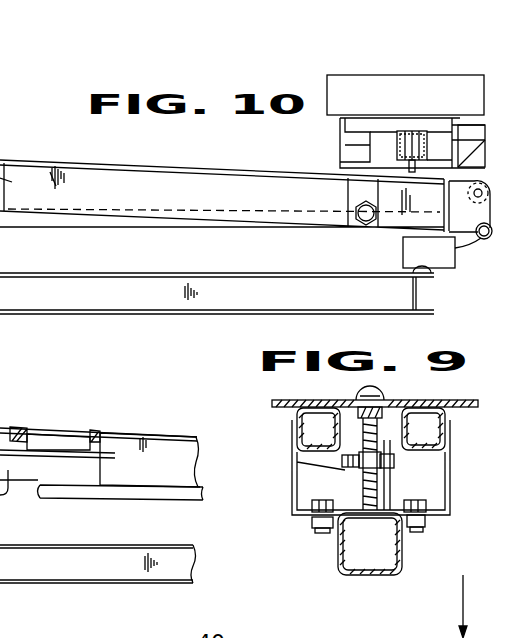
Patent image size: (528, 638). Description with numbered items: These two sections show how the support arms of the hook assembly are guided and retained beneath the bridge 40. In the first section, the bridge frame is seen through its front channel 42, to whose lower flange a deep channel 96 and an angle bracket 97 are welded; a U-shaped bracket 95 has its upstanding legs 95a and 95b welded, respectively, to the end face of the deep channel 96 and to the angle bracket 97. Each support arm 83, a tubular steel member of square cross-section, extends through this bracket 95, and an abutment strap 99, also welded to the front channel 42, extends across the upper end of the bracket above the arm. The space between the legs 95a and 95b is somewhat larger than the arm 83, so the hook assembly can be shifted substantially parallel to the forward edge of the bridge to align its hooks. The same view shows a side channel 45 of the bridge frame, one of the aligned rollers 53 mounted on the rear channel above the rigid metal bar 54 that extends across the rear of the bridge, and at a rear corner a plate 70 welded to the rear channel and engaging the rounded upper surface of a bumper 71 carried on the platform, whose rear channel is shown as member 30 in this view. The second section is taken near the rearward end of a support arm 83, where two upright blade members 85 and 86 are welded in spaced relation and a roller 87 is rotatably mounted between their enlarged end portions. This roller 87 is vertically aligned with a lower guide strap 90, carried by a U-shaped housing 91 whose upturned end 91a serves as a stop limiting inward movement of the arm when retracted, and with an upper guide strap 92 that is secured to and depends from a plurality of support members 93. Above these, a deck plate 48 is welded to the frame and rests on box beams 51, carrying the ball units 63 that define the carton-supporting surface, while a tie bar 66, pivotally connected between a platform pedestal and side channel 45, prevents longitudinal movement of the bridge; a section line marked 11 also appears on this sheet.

In FIG. 9, the section line 11- 11 is at (449, 606).
In FIG. 10, the I-beam support member 30 is at (263, 304).
In FIG. 10, the bridge 40 is at (60, 159).
In FIG. 10, the front channel 42 is at (336, 84).
In FIG. 10, the side channel 45 is at (157, 184).
In FIG. 10, the deck plate 48 is at (345, 78).
In FIG. 9, the deck plate 48 is at (293, 401).
In FIG. 9, the box beam 51 is at (426, 407).
In FIG. 10, the roller 53 is at (424, 209).
In FIG. 10, the rigid metal bar 54 is at (442, 252).
In FIG. 9, the ball unit 63 is at (368, 397).
In FIG. 10, the tie bar 66 is at (108, 494).
In FIG. 10, the plate 70 is at (403, 250).
In FIG. 10, the bumper 71 is at (411, 270).
In FIG. 10, the support arm 83 is at (342, 138).
In FIG. 9, the support arm 83 is at (340, 552).
In FIG. 9, the blade member 85 is at (296, 462).
In FIG. 9, the blade member 86 is at (392, 487).
In FIG. 9, the roller 87 is at (370, 483).
In FIG. 9, the lower guide strap 90 is at (370, 544).
In FIG. 10, the U-shaped housing 91 is at (98, 540).
In FIG. 9, the U-shaped housing 91 is at (292, 508).
In FIG. 10, the upturned end 91a is at (0, 468).
In FIG. 9, the upturned end 91a is at (307, 493).
In FIG. 10, the upper guide strap 92 is at (100, 452).
In FIG. 9, the upper guide strap 92 is at (318, 429).
In FIG. 10, the support member 93 is at (12, 162).
In FIG. 9, the support member 93 is at (392, 412).
In FIG. 10, the bracket 95 is at (440, 156).
In FIG. 10, the upstanding leg 95a is at (342, 157).
In FIG. 10, the upstanding leg 95b is at (480, 130).
In FIG. 10, the deep channel 96 is at (352, 122).
In FIG. 10, the angle bracket 97 is at (482, 128).
In FIG. 10, the abutment strap 99 is at (403, 118).